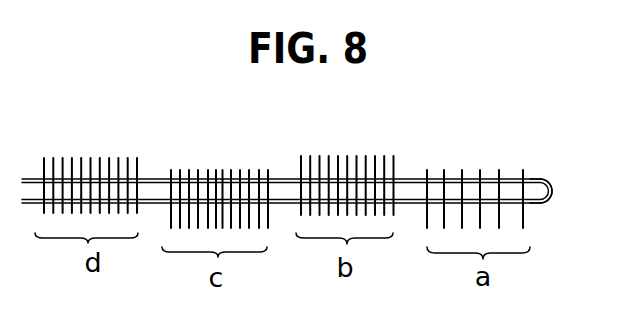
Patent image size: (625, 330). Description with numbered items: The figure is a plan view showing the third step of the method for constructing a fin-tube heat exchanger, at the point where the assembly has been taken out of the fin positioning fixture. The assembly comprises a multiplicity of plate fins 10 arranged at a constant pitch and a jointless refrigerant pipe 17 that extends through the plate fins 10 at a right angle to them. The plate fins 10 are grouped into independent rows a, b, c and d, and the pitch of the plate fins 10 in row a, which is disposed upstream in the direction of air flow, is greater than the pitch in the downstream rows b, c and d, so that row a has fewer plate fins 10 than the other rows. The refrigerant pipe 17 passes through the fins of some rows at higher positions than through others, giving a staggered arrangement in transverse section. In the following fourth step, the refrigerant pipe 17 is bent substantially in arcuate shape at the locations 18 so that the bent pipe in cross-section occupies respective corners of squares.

The plate fins 10 is at (440, 167).
The refrigerant pipe 17 is at (537, 177).
The arcuate bend of refrigerant pipe 18 is at (410, 205).